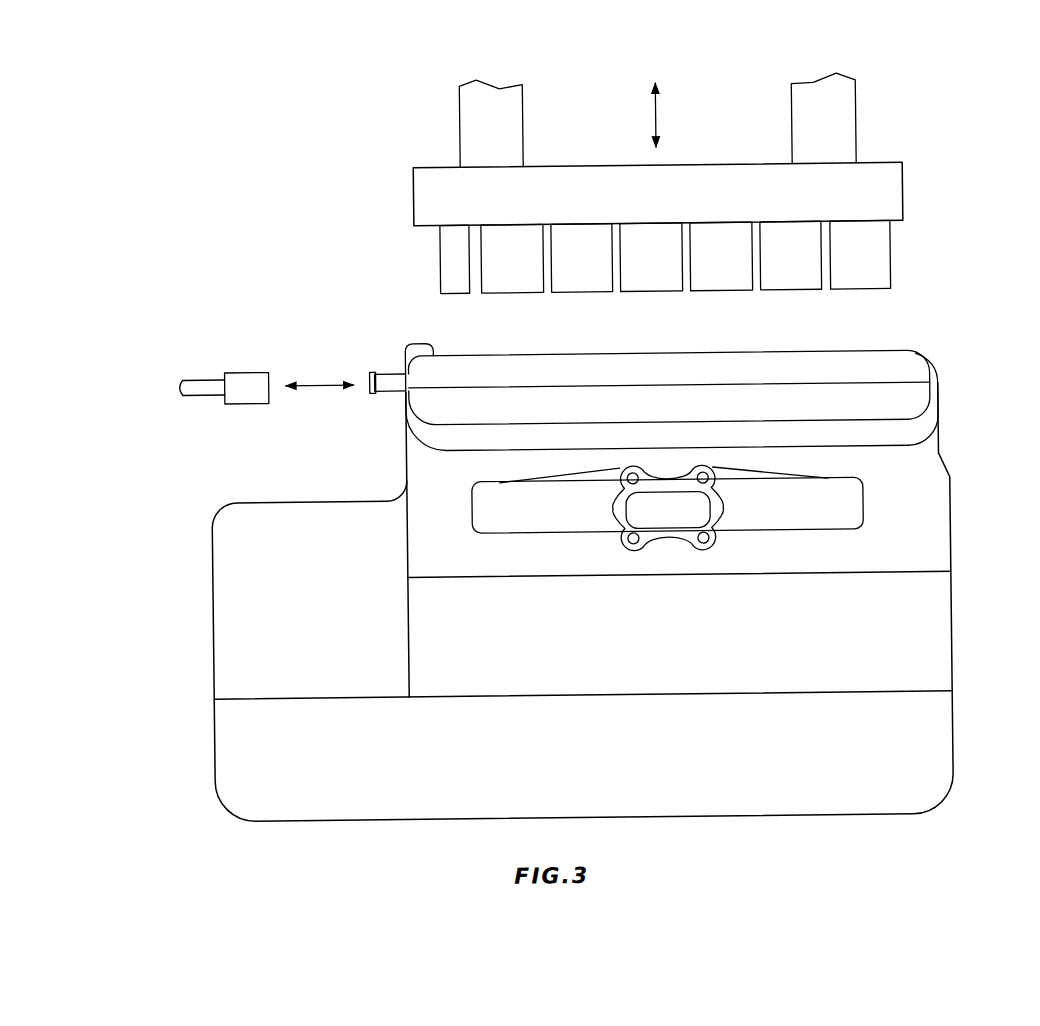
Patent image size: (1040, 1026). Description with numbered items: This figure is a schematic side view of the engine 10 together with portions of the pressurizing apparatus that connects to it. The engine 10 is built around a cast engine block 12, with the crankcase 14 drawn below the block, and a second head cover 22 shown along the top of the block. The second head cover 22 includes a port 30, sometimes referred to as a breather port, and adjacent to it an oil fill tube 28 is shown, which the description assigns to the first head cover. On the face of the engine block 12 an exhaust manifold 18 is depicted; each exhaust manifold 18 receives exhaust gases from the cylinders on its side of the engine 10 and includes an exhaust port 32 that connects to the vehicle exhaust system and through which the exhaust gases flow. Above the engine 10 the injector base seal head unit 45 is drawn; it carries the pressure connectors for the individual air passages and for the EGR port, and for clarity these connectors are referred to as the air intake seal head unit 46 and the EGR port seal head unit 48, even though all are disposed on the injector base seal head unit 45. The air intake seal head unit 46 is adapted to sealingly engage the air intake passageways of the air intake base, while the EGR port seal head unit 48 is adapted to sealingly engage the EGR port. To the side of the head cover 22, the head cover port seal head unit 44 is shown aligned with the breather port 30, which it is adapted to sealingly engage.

The engine 10 is at (198, 533).
The cast engine block 12 is at (939, 626).
The crankcase 14 is at (937, 761).
The exhaust manifold 18 is at (721, 552).
The second head cover 22 is at (911, 371).
The oil fill tube 28 is at (407, 341).
The port 30 is at (389, 387).
The exhaust port 32 is at (622, 529).
The head cover port seal head unit 44 is at (249, 388).
The injector base seal head unit 45 is at (912, 185).
The air intake seal head unit 46 is at (778, 292).
The EGR port seal head unit 48 is at (446, 256).